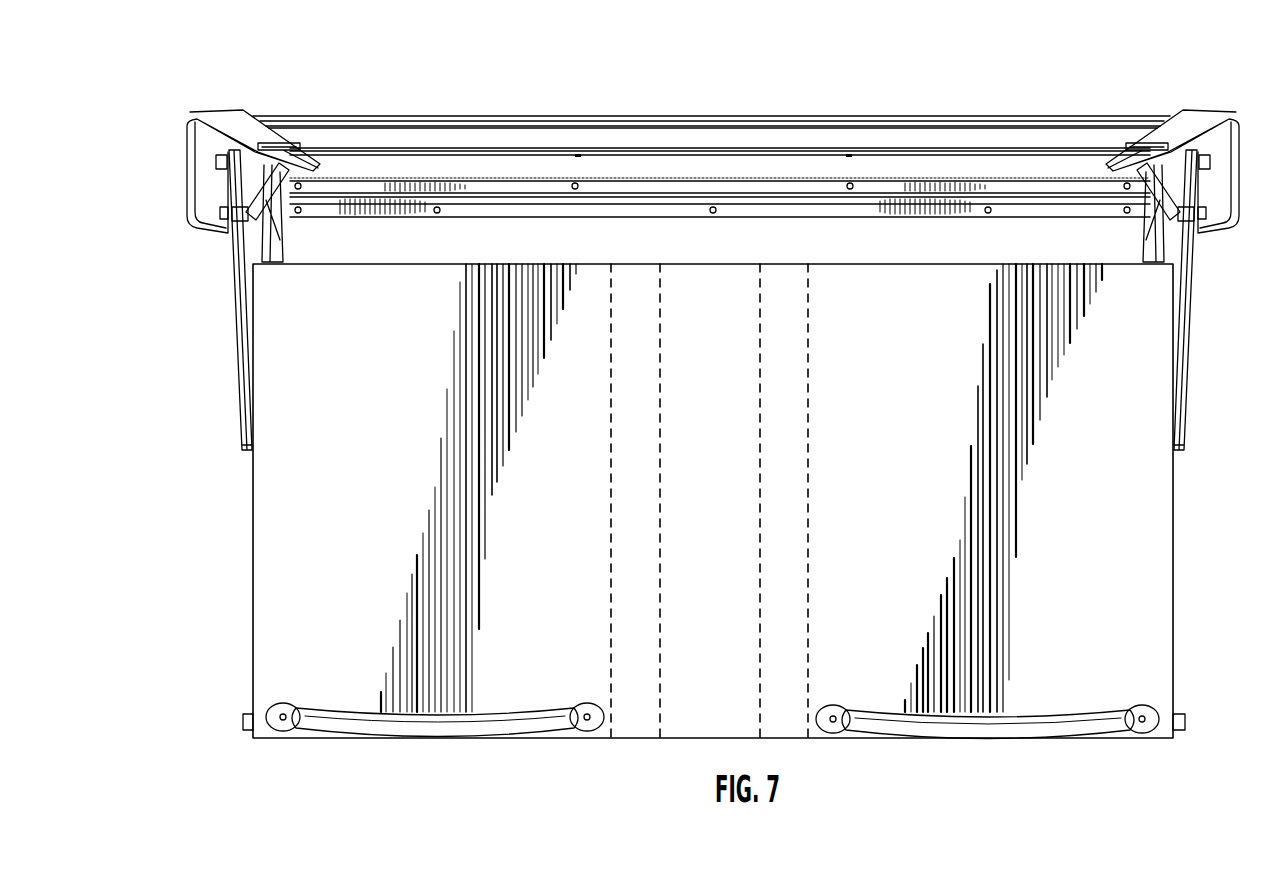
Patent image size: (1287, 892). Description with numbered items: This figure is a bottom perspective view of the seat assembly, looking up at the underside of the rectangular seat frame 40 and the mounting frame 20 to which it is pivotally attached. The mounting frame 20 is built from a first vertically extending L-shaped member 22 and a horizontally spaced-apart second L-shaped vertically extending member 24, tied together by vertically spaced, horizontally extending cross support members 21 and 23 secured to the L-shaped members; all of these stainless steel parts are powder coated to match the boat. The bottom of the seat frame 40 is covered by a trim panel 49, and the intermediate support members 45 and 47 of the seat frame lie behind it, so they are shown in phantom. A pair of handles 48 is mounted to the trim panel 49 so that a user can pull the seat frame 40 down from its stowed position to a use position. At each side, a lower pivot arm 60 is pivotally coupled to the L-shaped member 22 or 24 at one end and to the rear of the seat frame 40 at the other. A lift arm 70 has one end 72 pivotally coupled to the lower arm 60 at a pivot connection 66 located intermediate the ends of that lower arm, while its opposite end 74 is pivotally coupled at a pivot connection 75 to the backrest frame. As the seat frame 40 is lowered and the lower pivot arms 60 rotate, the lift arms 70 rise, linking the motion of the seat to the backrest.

The mounting frame 20 is at (257, 103).
The cross support member 21 is at (627, 148).
The first vertically extending L-shaped member 22 is at (1220, 137).
The cross support member 23 is at (512, 118).
The second L-shaped vertically extending member 24 is at (212, 228).
The seat frame 40 is at (1182, 535).
The intermediate support member 45 is at (808, 503).
The intermediate support member 47 is at (612, 385).
The handle 48 is at (437, 720).
The trim panel 49 is at (727, 496).
The lower pivot arm 60 is at (235, 272).
The pivot connection 66 is at (255, 218).
The lift arm 70 is at (268, 193).
The end of lift arm 72 is at (272, 262).
The opposite end of lift arm 74 is at (292, 187).
The pivot connection 75 is at (310, 165).